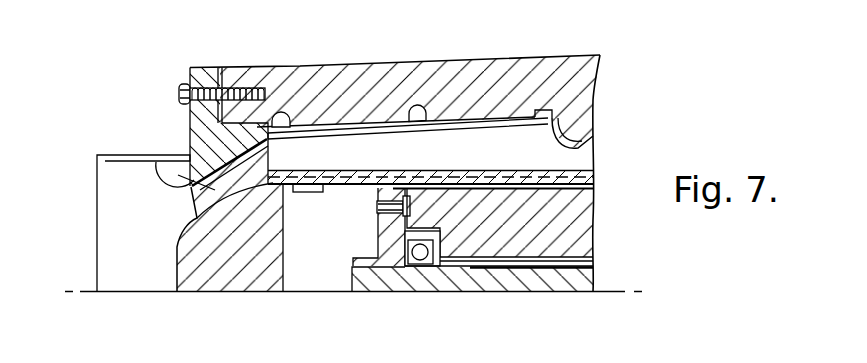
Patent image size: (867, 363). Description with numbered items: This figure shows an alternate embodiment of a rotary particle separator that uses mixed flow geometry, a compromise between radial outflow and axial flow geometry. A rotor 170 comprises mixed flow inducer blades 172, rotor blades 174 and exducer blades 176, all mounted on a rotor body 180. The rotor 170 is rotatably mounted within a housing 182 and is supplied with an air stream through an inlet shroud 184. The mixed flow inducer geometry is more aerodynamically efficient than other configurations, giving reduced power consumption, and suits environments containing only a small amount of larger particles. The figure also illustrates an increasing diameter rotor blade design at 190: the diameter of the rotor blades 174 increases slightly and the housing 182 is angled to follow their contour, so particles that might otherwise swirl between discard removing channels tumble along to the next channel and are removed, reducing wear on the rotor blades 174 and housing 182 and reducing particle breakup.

The rotor 170 is at (176, 247).
The mixed flow inducer blades 172 is at (180, 164).
The rotor blades 174 is at (318, 137).
The exducer blades 176 is at (574, 140).
The rotor body 180 is at (377, 186).
The housing 182 is at (444, 62).
The inlet shroud 184 is at (196, 131).
The increasing diameter rotor blade design 190 is at (537, 118).